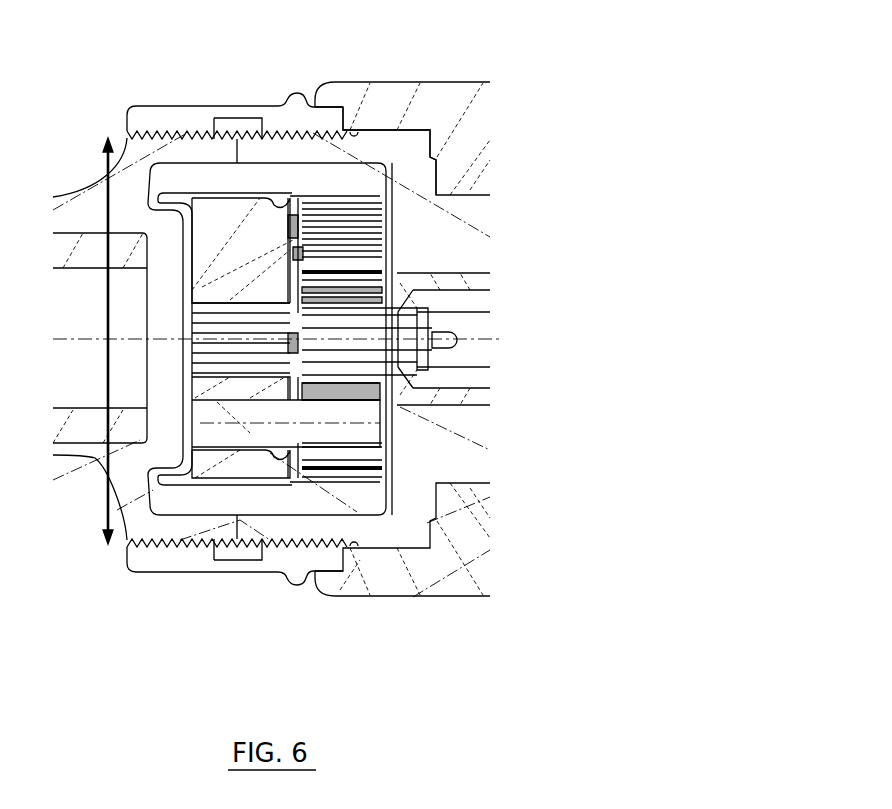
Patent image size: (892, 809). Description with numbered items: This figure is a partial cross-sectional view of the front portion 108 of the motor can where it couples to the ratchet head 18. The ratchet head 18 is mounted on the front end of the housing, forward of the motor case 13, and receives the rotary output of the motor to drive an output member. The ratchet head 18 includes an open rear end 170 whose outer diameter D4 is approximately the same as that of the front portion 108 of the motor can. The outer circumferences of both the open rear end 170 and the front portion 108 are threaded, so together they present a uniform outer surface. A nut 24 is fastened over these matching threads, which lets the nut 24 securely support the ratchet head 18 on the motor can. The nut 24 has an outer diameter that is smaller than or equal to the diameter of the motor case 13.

The motor case 13 is at (420, 583).
The ratchet head 18 is at (90, 203).
The nut 24 is at (184, 120).
The front portion 108 is at (388, 143).
The open rear end 170 is at (167, 530).
The outer diameter D4 is at (103, 455).